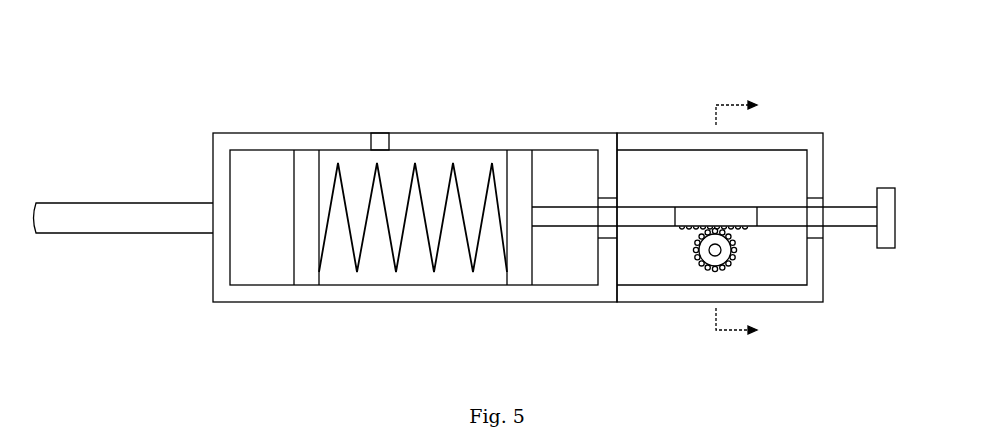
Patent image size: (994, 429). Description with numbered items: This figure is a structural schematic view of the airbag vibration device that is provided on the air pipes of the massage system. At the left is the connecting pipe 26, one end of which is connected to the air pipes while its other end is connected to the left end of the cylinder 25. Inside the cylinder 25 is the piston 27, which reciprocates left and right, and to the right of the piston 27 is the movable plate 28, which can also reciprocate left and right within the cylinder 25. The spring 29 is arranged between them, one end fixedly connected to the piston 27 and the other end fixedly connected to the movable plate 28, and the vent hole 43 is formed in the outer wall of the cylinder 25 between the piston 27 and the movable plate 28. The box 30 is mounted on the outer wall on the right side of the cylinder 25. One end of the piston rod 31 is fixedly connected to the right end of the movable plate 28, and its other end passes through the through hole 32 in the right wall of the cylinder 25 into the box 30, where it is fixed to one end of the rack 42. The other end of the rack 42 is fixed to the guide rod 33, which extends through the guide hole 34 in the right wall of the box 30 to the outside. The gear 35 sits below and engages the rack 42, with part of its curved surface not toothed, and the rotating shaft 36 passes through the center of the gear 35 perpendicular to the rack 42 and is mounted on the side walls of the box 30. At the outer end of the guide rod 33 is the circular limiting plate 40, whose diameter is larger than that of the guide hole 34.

The cylinder 25 is at (265, 133).
The connecting pipe 26 is at (122, 203).
The piston 27 is at (294, 250).
The movable plate 28 is at (533, 170).
The spring 29 is at (416, 165).
The box 30 is at (648, 133).
The piston rod 31 is at (570, 227).
The through hole 32 is at (606, 240).
The guide rod 33 is at (789, 207).
The guide hole 34 is at (815, 198).
The gear 35 is at (711, 265).
The rotating shaft 36 is at (712, 253).
The limiting plate 40 is at (895, 200).
The rack 42 is at (755, 228).
The vent hole 43 is at (376, 133).